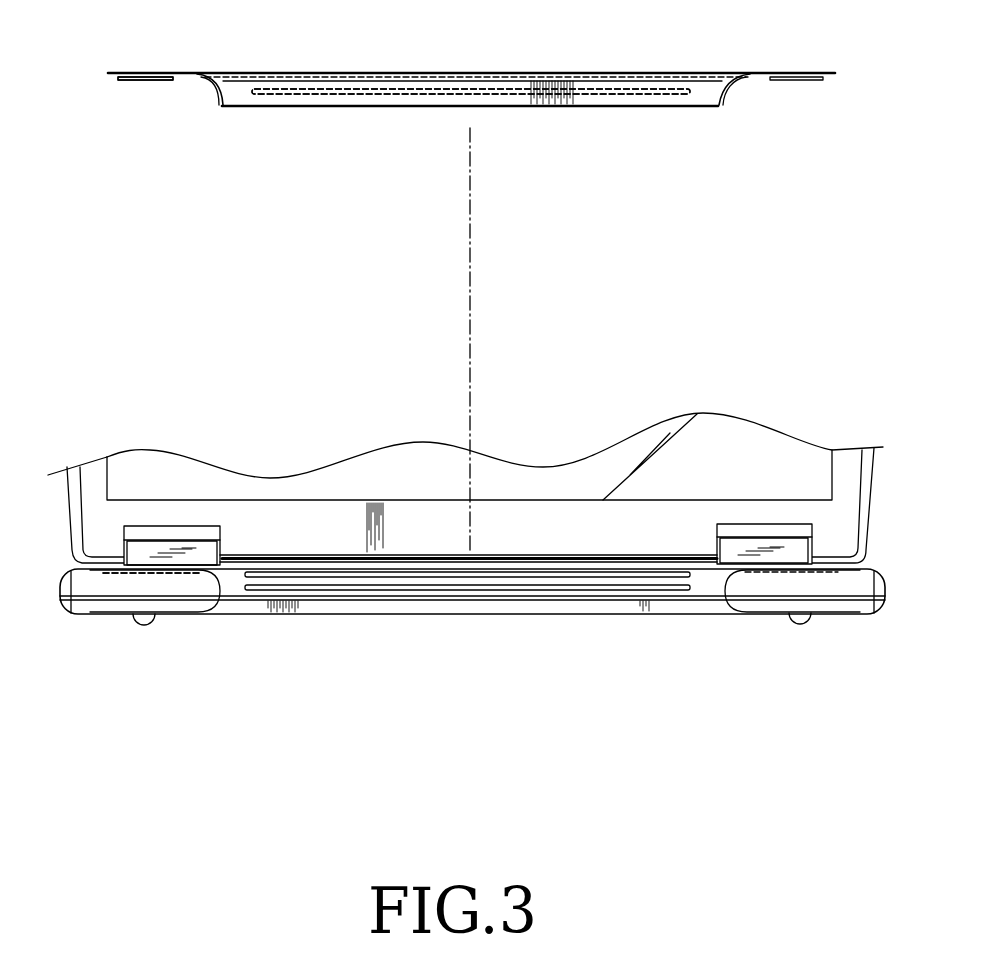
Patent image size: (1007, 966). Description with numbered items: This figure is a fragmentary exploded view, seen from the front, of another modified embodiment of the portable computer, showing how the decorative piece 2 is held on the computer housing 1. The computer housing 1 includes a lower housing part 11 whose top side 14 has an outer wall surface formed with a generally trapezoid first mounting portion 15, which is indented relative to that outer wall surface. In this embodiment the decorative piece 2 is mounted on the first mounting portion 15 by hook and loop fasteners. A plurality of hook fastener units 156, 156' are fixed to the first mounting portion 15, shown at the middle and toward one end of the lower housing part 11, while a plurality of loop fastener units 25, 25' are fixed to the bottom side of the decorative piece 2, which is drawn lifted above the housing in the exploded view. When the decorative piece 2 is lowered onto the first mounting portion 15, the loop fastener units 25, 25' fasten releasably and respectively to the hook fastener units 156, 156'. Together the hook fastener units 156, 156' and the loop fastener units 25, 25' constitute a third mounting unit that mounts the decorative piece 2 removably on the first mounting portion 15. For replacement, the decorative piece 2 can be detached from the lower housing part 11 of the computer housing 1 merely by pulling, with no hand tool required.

The computer housing 1 is at (892, 540).
The decorative piece 2 is at (472, 72).
The lower housing part 11 is at (73, 570).
The top side 14 is at (112, 563).
The first mounting portion 15 is at (233, 575).
The loop fastener unit 25 is at (471, 115).
The loop fastener unit 25' is at (132, 116).
The hook fastener unit 156 is at (467, 623).
The hook fastener unit 156' is at (136, 623).